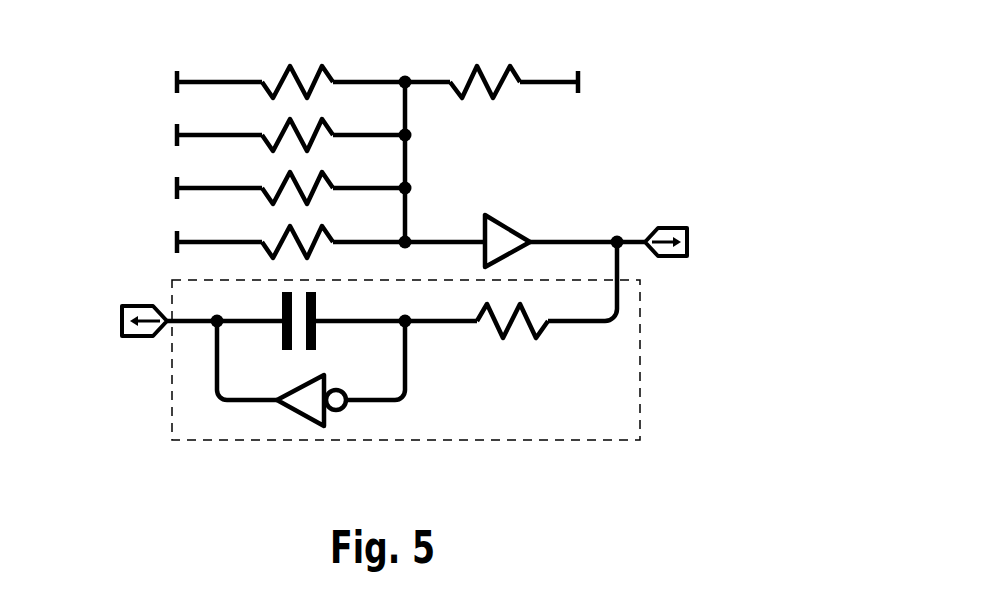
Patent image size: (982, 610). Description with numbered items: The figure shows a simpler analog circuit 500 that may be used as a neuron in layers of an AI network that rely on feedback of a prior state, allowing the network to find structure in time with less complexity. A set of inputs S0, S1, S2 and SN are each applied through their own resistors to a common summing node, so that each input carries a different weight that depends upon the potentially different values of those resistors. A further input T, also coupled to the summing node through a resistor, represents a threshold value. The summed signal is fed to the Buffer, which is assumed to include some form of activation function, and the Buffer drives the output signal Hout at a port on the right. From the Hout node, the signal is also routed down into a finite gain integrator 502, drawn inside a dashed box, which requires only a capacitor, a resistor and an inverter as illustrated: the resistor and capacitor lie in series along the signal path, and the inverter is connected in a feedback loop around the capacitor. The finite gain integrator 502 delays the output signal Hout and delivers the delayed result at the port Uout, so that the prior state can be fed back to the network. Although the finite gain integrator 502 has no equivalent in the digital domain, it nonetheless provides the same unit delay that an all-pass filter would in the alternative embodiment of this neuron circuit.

The analog circuit 500 is at (693, 166).
The finite gain integrator 502 is at (672, 365).
The input S0 is at (259, 82).
The input S1 is at (259, 135).
The input S2 is at (259, 188).
The input SN is at (256, 242).
The input T is at (515, 82).
The element Buffer is at (511, 220).
The output signal Hout is at (698, 243).
The output Uout is at (123, 323).